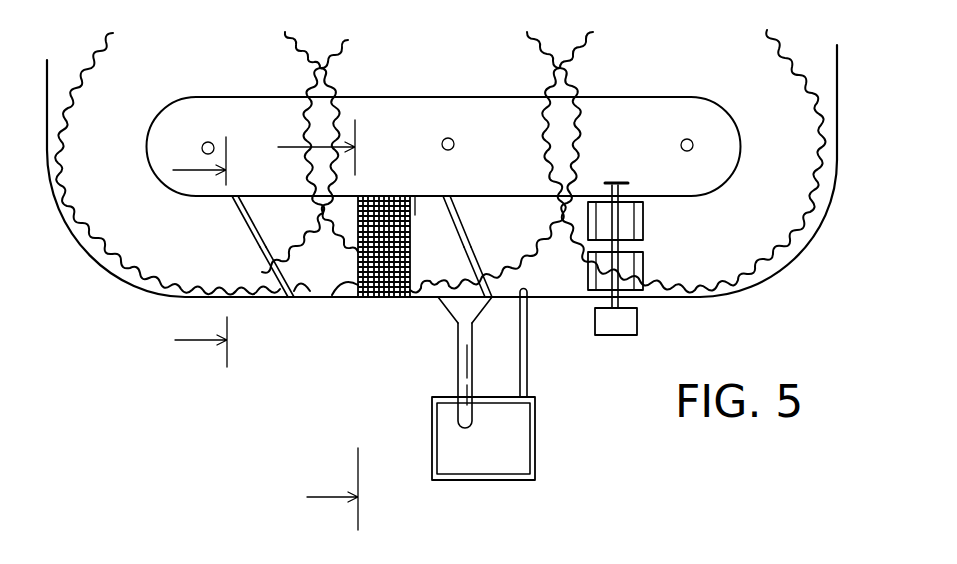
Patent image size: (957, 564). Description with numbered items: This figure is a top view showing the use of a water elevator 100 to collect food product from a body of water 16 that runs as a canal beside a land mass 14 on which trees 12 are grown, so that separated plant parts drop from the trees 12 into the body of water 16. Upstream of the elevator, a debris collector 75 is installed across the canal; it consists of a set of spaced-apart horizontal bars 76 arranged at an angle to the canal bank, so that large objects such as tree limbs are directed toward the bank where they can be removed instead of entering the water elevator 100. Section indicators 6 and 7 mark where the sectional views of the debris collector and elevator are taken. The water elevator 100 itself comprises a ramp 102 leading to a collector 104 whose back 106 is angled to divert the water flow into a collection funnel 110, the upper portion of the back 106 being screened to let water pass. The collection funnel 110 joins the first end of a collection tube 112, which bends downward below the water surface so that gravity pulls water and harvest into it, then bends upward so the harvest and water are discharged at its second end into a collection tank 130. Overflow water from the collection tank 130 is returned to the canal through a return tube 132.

The section line 6- 6 is at (214, 252).
The section line 7- 7 is at (331, 325).
The trees 12 is at (783, 55).
The land mass 14 is at (623, 112).
The body of water 16 is at (838, 78).
The debris collector 75 is at (228, 237).
The horizontal bars 76 is at (309, 302).
The water elevator 100 is at (456, 385).
The ramp 102 is at (344, 294).
The collector 104 is at (415, 215).
The back 106 is at (459, 226).
The collection funnel 110 is at (477, 270).
The collection tube 112 is at (462, 333).
The collection tank 130 is at (513, 443).
The return tube 132 is at (527, 378).